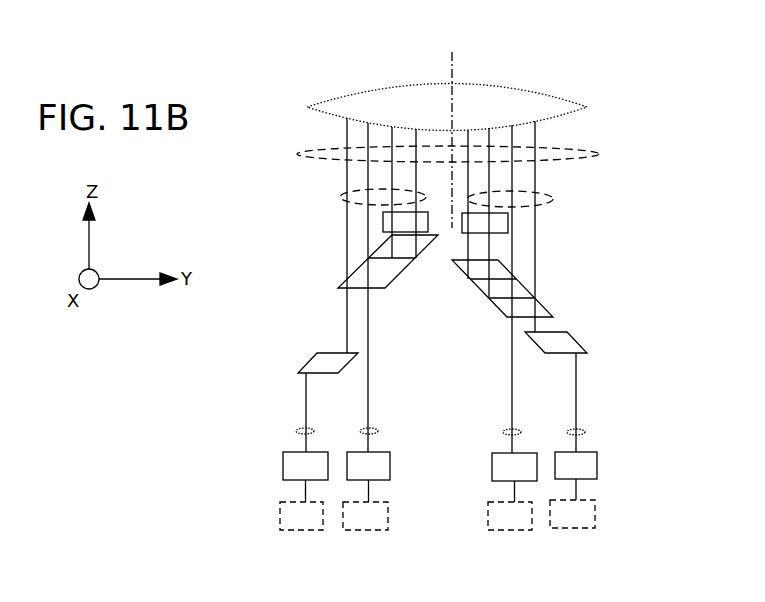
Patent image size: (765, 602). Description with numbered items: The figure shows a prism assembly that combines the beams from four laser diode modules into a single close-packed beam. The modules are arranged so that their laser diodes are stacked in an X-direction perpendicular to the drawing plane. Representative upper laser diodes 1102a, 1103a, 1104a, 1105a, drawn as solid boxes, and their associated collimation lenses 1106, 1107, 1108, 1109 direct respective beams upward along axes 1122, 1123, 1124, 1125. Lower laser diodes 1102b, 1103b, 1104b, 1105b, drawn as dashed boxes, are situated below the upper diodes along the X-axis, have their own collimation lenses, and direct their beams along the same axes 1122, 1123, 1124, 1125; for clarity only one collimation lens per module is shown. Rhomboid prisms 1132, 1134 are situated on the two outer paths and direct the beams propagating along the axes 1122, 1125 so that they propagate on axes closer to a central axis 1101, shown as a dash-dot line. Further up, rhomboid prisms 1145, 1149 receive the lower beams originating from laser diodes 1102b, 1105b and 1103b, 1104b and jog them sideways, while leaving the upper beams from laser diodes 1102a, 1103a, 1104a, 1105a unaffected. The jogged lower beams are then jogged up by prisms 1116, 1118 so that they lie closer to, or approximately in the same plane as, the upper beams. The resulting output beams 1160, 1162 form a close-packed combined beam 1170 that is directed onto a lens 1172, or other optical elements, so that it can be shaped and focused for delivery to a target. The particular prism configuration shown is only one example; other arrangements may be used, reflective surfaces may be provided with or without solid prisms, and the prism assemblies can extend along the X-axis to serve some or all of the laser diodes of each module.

The central axis 1101 is at (455, 63).
The lens 1172 is at (432, 118).
The close-packed combined beam 1170 is at (600, 152).
The output beam 1160 is at (340, 198).
The output beam 1162 is at (553, 200).
The prism 1116 is at (383, 221).
The prism 1118 is at (508, 228).
The rhomboid prism 1145 is at (408, 267).
The rhomboid prism 1149 is at (473, 290).
The rhomboid prism 1132 is at (328, 353).
The rhomboid prism 1134 is at (587, 353).
The axis 1122 is at (307, 397).
The axis 1123 is at (370, 384).
The axis 1124 is at (517, 417).
The axis 1125 is at (577, 395).
The collimation lens 1106 is at (298, 430).
The collimation lens 1107 is at (378, 432).
The collimation lens 1108 is at (522, 433).
The collimation lens 1109 is at (578, 433).
The laser diode 1102a is at (283, 467).
The laser diode 1102b is at (280, 513).
The laser diode 1103a is at (390, 467).
The laser diode 1103b is at (363, 532).
The laser diode 1104a is at (492, 482).
The laser diode 1104b is at (523, 530).
The laser diode 1105a is at (597, 463).
The laser diode 1105b is at (595, 512).